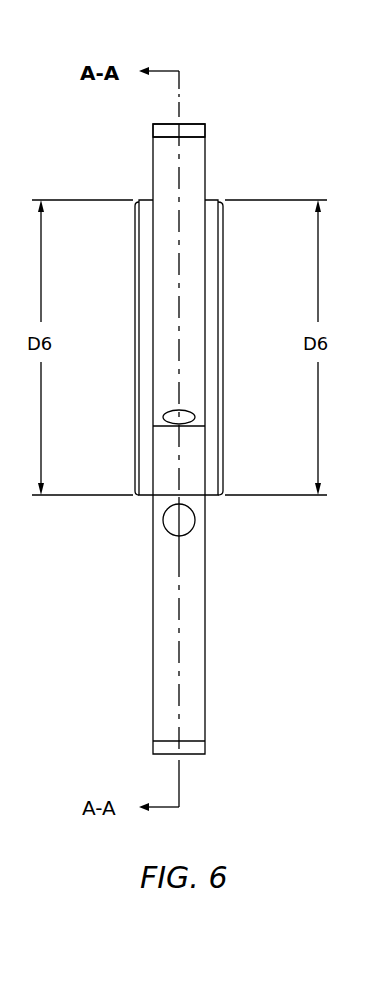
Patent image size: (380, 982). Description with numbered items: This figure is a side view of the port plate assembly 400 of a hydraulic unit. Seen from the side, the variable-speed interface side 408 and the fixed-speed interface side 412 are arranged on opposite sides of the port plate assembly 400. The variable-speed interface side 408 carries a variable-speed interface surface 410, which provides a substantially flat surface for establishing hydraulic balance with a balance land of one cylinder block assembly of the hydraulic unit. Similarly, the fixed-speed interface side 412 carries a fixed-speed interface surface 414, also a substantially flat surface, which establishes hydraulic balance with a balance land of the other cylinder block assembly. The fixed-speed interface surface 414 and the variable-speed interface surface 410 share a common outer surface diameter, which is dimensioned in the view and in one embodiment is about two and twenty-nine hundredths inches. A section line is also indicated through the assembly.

The port plate assembly 400 is at (270, 105).
The variable-speed interface side 408 is at (273, 172).
The variable-speed interface surface 410 is at (223, 468).
The fixed-speed interface side 412 is at (95, 148).
The fixed-speed interface surface 414 is at (133, 468).